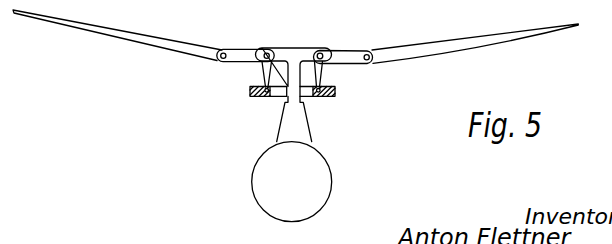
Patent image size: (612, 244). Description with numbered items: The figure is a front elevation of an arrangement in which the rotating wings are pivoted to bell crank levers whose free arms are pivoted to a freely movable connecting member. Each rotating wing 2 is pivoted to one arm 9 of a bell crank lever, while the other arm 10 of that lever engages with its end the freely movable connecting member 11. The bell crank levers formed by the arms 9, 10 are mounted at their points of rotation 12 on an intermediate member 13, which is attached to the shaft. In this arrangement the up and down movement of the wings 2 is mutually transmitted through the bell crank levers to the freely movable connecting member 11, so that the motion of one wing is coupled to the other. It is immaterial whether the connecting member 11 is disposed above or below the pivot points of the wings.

The rotating wing 2 is at (447, 42).
The arm of bell crank lever 9 is at (337, 55).
The other arm of bell crank lever 10 is at (321, 74).
The freely movable connecting member 11 is at (327, 98).
The point of rotation 12 is at (322, 52).
The intermediate member 13 is at (293, 54).